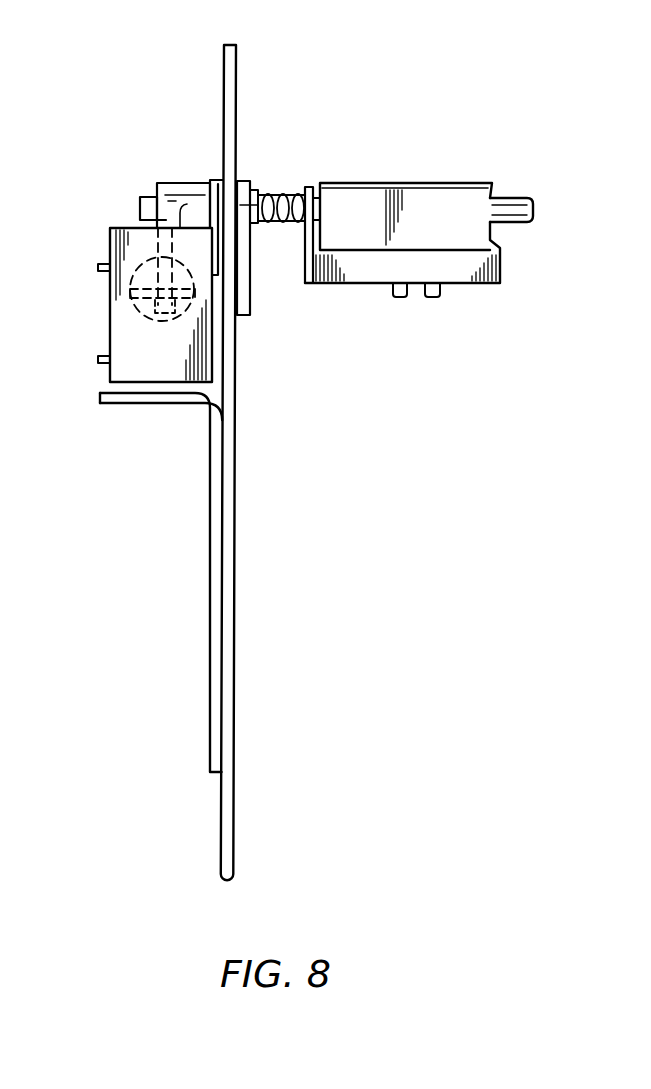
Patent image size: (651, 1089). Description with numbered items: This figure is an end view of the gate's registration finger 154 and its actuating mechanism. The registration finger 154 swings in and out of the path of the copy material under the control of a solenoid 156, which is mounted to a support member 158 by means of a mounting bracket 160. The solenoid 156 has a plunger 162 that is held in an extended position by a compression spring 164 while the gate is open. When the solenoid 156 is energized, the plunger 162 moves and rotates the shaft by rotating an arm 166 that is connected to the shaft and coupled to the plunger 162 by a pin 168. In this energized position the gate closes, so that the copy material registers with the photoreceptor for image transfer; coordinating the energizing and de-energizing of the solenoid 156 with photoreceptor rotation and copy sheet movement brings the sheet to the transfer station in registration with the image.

The registration finger 154 is at (398, 183).
The solenoid 156 is at (127, 362).
The support member 158 is at (235, 592).
The mounting bracket 160 is at (210, 578).
The solenoid plunger 162 is at (105, 276).
The compression spring 164 is at (533, 203).
The arm 166 is at (140, 221).
The pin 168 is at (150, 285).